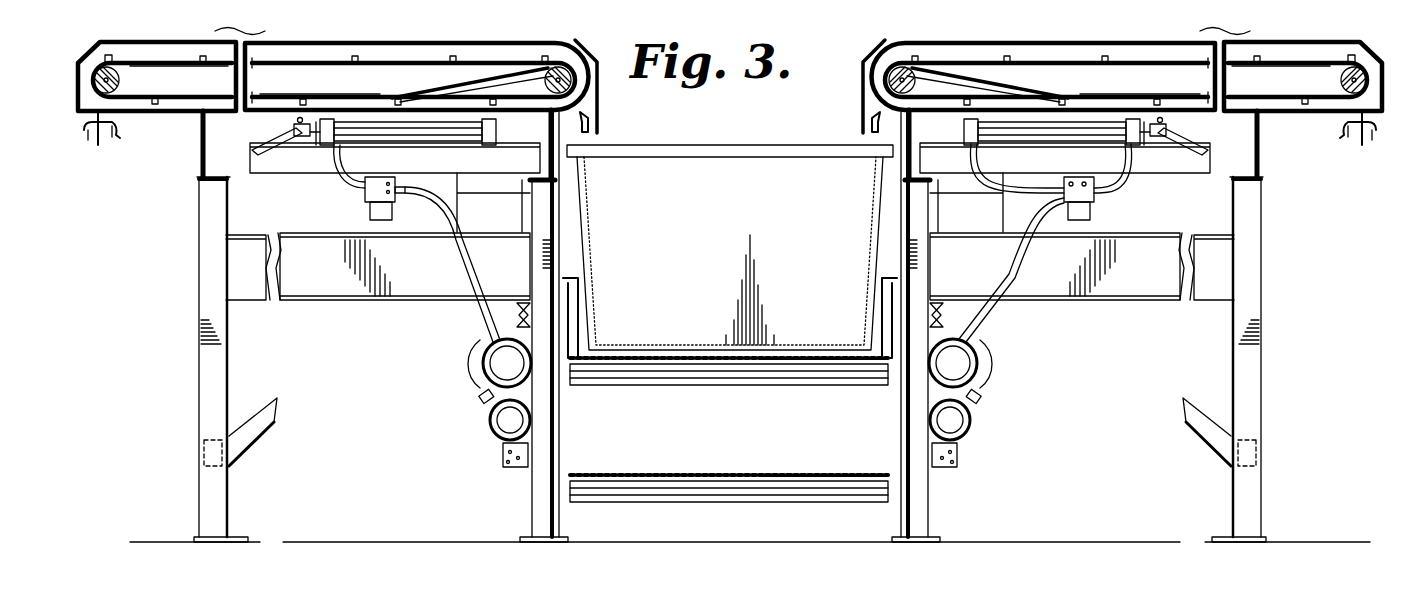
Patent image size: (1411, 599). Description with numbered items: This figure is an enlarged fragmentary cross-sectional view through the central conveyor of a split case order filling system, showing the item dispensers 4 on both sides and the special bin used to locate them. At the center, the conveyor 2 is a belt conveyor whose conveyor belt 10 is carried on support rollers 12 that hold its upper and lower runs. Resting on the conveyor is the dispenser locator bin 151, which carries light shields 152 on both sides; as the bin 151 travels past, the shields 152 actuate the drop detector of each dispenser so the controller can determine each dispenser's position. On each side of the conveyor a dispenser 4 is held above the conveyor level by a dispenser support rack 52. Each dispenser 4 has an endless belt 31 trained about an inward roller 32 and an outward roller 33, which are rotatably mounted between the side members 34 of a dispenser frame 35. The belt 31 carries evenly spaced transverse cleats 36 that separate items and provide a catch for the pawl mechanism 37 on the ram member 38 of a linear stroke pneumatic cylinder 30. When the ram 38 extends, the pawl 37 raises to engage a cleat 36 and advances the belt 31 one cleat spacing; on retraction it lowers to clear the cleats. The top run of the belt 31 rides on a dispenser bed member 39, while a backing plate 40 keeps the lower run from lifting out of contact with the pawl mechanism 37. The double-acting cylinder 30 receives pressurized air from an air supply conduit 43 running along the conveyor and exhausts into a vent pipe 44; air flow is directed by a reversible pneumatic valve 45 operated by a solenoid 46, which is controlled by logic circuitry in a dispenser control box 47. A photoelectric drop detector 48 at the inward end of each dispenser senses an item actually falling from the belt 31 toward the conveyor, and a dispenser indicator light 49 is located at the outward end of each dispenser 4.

The conveyor 2 is at (700, 356).
The item dispenser 4 is at (164, 40).
The conveyor belt 10 is at (712, 474).
The support rollers 12 is at (636, 385).
The pneumatic cylinder 30 is at (398, 132).
The endless belt 31 is at (310, 62).
The inward roller 32 is at (563, 58).
The outward roller 33 is at (92, 84).
The side members 34 is at (375, 48).
The dispenser frame 35 is at (143, 118).
The cleats 36 is at (205, 56).
The pawl mechanism 37 is at (292, 138).
The ram member 38 is at (316, 122).
The dispenser bed member 39 is at (186, 70).
The backing plate 40 is at (284, 93).
The air supply conduit 43 is at (498, 426).
The vent pipe 44 is at (490, 370).
The pneumatic valve 45 is at (364, 195).
The solenoid 46 is at (372, 212).
The dispenser control box 47 is at (495, 232).
The photoelectric drop detector 48 is at (590, 126).
The dispenser indicator light 49 is at (94, 130).
The dispenser support rack 52 is at (190, 378).
The dispenser locator bin 151 is at (749, 212).
The light shields 152 is at (604, 24).